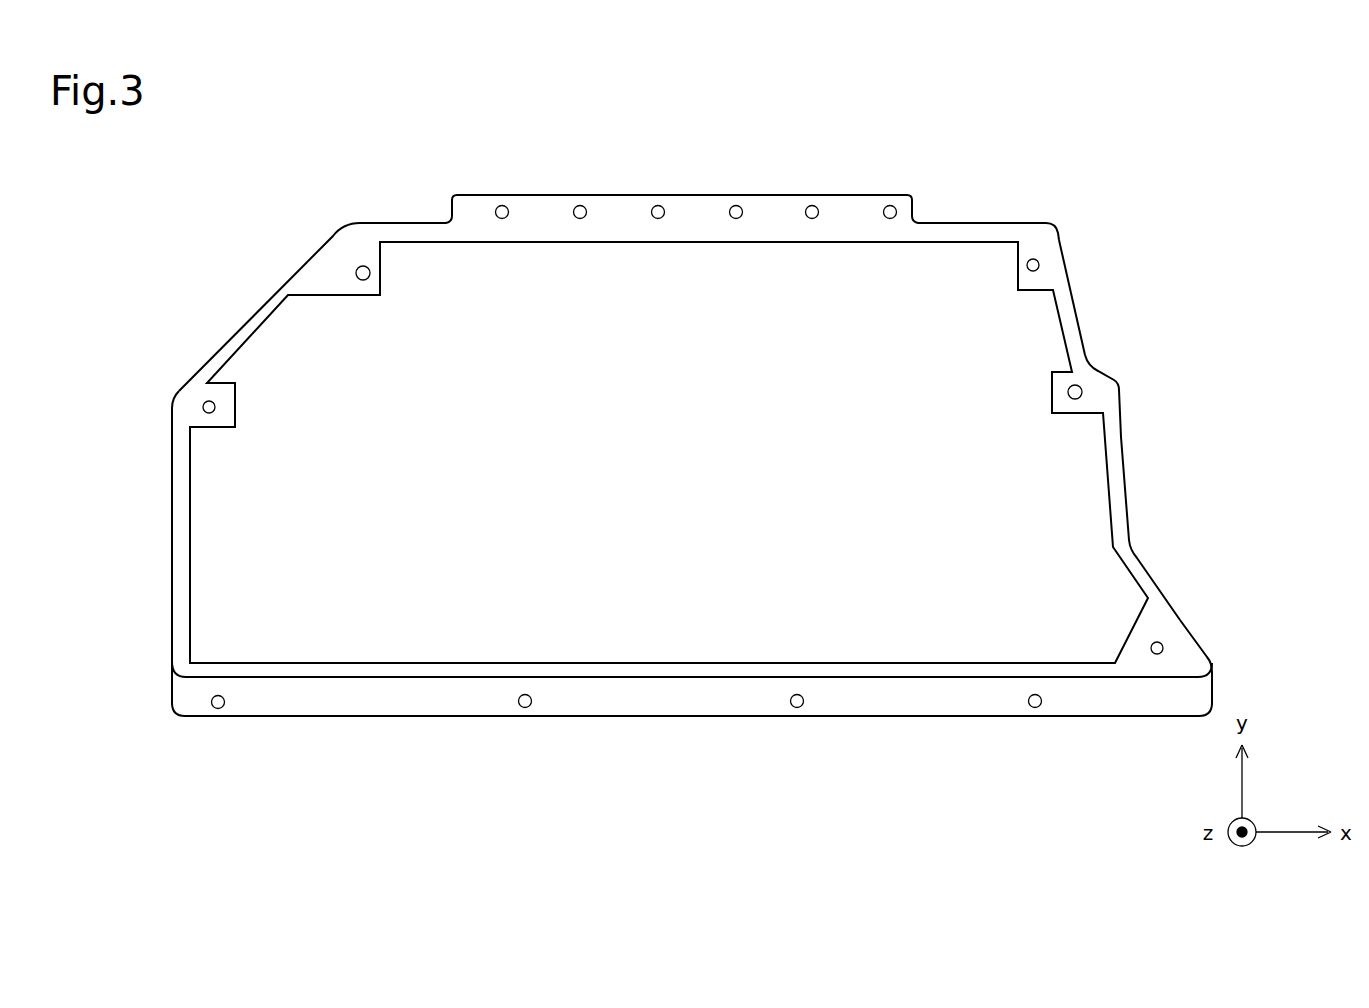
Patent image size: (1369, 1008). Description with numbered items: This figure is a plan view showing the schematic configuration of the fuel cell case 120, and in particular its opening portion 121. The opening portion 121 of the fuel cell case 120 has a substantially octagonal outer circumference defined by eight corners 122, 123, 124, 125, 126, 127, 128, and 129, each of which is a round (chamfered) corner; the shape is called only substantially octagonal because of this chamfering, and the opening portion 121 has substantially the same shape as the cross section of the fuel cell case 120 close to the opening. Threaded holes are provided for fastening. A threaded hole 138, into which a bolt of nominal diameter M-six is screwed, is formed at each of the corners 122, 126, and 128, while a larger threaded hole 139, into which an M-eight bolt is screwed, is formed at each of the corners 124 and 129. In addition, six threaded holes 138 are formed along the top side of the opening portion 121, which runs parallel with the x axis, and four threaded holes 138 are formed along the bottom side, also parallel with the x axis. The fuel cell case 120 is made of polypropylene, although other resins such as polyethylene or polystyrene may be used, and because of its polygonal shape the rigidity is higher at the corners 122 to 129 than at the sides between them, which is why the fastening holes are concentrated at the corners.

The fuel cell case 120 is at (1143, 117).
The opening portion 121 is at (953, 231).
The corner 122 is at (1052, 225).
The corner 123 is at (1087, 355).
The corner 124 is at (1117, 380).
The corner 125 is at (1131, 540).
The corner 126 is at (1213, 663).
The corner 127 is at (172, 673).
The corner 128 is at (177, 390).
The corner 129 is at (323, 242).
The threaded hole 138 is at (890, 205).
The threaded hole 139 is at (364, 265).